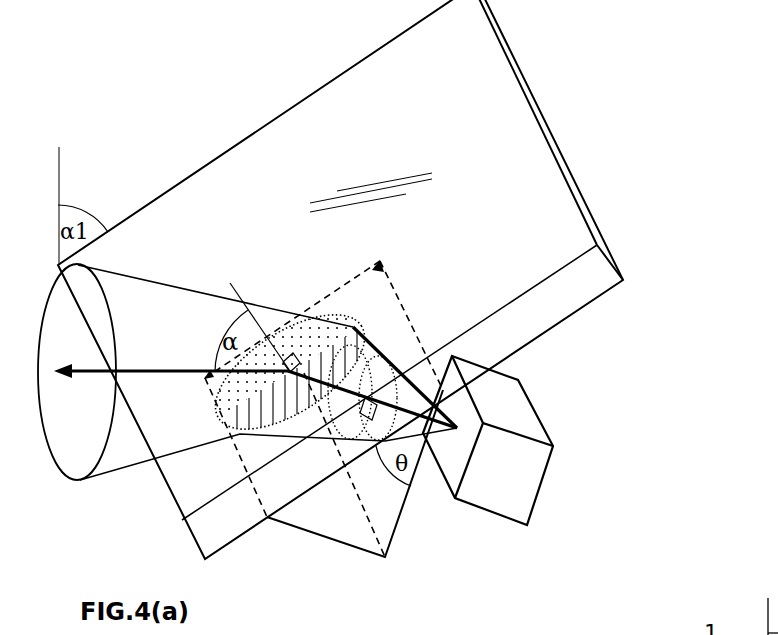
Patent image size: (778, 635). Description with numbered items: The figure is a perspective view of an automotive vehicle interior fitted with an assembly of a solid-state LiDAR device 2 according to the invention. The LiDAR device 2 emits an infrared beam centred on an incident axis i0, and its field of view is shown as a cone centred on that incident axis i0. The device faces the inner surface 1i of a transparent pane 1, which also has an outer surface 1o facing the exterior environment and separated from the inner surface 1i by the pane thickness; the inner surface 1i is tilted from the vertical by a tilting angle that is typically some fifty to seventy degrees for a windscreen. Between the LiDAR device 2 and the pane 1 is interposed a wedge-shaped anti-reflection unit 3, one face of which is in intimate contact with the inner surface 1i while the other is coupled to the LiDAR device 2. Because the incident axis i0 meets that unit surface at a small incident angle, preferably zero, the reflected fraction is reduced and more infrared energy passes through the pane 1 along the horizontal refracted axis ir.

The transparent pane 1 is at (330, 47).
The outer surface 1o is at (253, 160).
The inner surface 1i is at (587, 307).
The LiDAR device 2 is at (523, 428).
The anti-reflection unit 3 is at (347, 537).
The refracted axis ir is at (171, 361).
The incident axis i0 is at (394, 390).